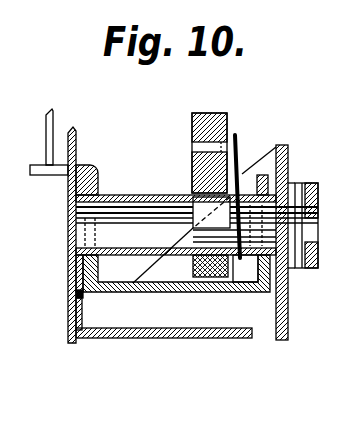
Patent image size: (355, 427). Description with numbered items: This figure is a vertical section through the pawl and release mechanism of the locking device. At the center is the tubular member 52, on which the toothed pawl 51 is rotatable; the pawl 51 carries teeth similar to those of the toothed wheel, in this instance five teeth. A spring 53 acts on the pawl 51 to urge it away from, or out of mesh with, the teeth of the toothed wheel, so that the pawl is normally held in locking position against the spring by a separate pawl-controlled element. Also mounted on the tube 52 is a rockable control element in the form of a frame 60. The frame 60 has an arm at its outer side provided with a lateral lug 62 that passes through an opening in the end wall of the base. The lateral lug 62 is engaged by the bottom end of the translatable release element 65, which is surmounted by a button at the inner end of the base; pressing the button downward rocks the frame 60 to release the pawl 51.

The pawl 51 is at (222, 113).
The tubular member 52 is at (122, 197).
The spring 53 is at (243, 172).
The frame 60 is at (122, 293).
The lateral lug 62 is at (50, 174).
The release element 65 is at (53, 124).